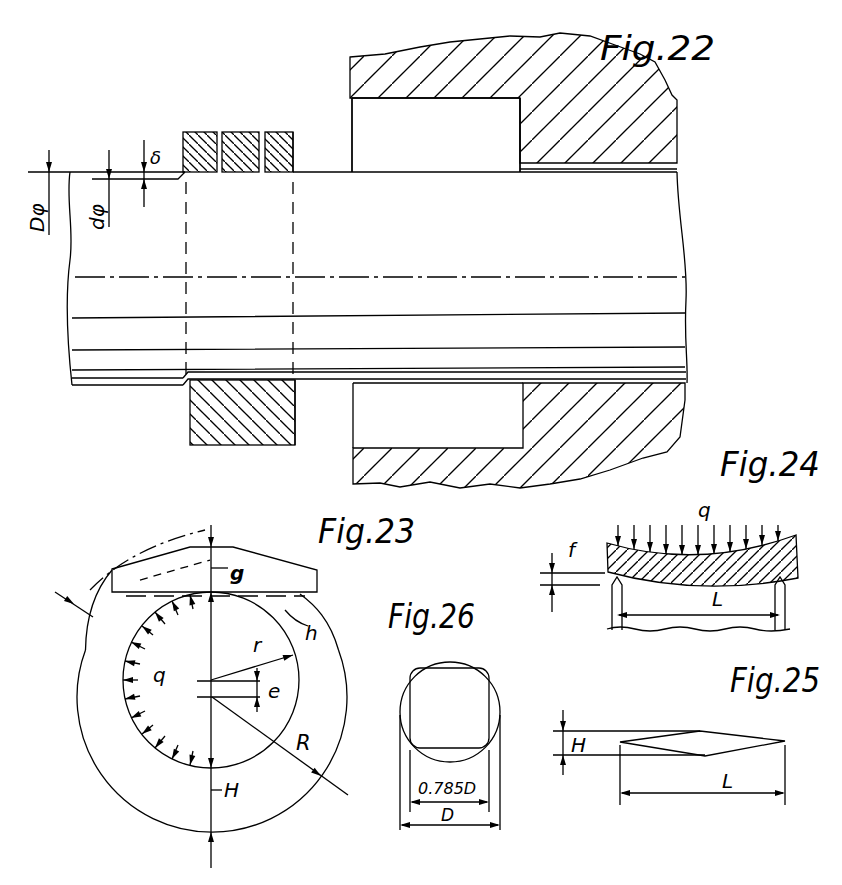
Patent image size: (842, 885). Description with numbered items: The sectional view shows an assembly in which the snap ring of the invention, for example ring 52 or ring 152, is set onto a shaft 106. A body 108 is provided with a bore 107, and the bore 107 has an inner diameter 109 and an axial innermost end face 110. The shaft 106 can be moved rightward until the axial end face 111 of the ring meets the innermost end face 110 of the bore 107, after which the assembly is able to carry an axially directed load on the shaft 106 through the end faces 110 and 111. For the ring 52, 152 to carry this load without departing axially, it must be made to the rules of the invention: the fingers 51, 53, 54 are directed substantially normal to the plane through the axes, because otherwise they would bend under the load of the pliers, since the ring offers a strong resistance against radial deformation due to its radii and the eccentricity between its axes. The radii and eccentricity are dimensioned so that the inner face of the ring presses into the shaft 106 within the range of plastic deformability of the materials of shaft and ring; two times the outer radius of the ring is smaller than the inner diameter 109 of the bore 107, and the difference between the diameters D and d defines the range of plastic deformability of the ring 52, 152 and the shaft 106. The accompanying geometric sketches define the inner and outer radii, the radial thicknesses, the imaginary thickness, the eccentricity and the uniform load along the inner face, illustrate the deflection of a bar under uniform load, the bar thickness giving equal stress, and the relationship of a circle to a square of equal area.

In FIG. 22, the finger 51 is at (242, 142).
In FIG. 22, the ring 52 is at (212, 445).
In FIG. 22, the ring 152 is at (242, 433).
In FIG. 22, the finger 53 is at (202, 142).
In FIG. 22, the finger 54 is at (276, 142).
In FIG. 22, the shaft 106 is at (663, 212).
In FIG. 22, the bore 107 is at (362, 133).
In FIG. 22, the body 108 is at (665, 128).
In FIG. 23, the body 108 is at (90, 612).
In FIG. 22, the inner diameter 109 is at (412, 100).
In FIG. 22, the axial innermost end face 110 is at (520, 139).
In FIG. 22, the axial end face 111 is at (293, 423).